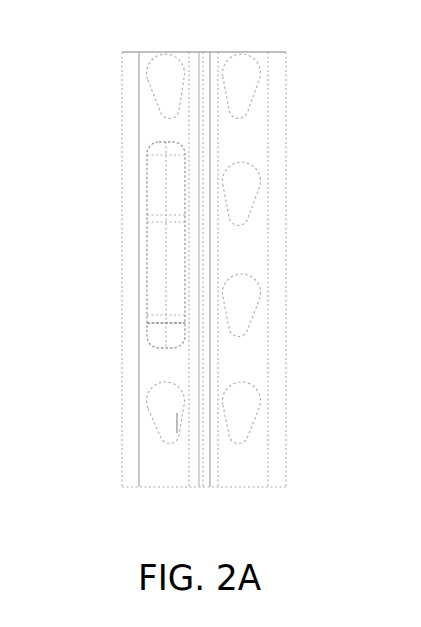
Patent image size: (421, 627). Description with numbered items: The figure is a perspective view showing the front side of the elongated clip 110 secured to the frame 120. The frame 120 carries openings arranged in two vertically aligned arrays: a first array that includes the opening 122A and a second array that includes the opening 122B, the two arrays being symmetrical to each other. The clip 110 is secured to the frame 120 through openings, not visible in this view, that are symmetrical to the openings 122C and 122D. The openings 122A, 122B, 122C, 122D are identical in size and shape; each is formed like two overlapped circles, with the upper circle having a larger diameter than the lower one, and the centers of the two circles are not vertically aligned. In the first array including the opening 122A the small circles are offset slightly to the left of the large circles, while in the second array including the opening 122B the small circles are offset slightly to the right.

The elongated clip 110 is at (160, 250).
The frame 120 is at (148, 373).
The opening 122A is at (237, 74).
The opening 122B is at (166, 75).
The opening 122C is at (240, 192).
The opening 122D is at (240, 303).